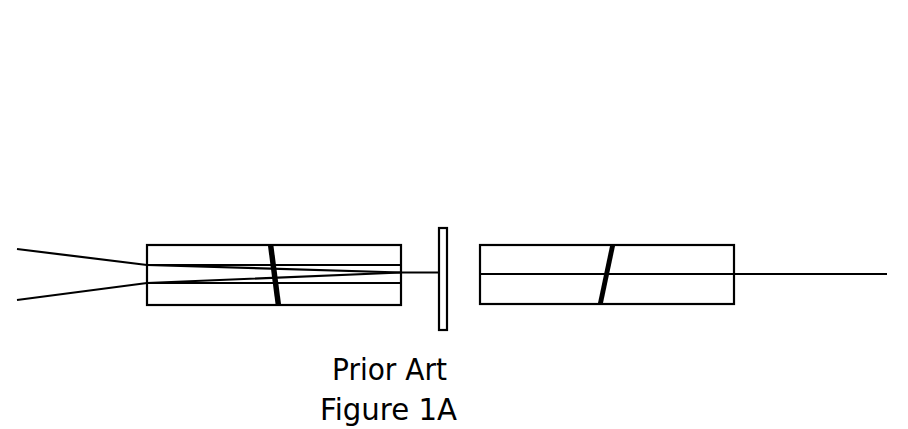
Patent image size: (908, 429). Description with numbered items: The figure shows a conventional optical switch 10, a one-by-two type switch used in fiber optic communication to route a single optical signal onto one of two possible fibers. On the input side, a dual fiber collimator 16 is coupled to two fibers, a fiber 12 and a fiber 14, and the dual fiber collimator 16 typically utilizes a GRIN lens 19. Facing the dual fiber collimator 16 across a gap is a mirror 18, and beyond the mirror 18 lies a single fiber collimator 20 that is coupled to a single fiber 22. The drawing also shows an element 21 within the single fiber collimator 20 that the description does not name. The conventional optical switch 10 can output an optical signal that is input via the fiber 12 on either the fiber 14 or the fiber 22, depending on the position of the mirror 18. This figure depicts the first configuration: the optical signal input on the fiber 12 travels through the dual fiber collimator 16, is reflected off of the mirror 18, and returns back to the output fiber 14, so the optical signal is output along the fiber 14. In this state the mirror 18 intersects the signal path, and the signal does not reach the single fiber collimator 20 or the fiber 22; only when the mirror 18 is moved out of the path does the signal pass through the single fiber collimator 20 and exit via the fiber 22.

The conventional optical switch 10 is at (406, 47).
The fiber 12 is at (108, 250).
The fiber 14 is at (108, 290).
The dual fiber collimator 16 is at (274, 194).
The mirror 18 is at (443, 228).
The GRIN lens 19 is at (330, 245).
The single fiber collimator 20 is at (604, 168).
The second tilted wedge element 21 is at (580, 245).
The fiber 22 is at (763, 274).